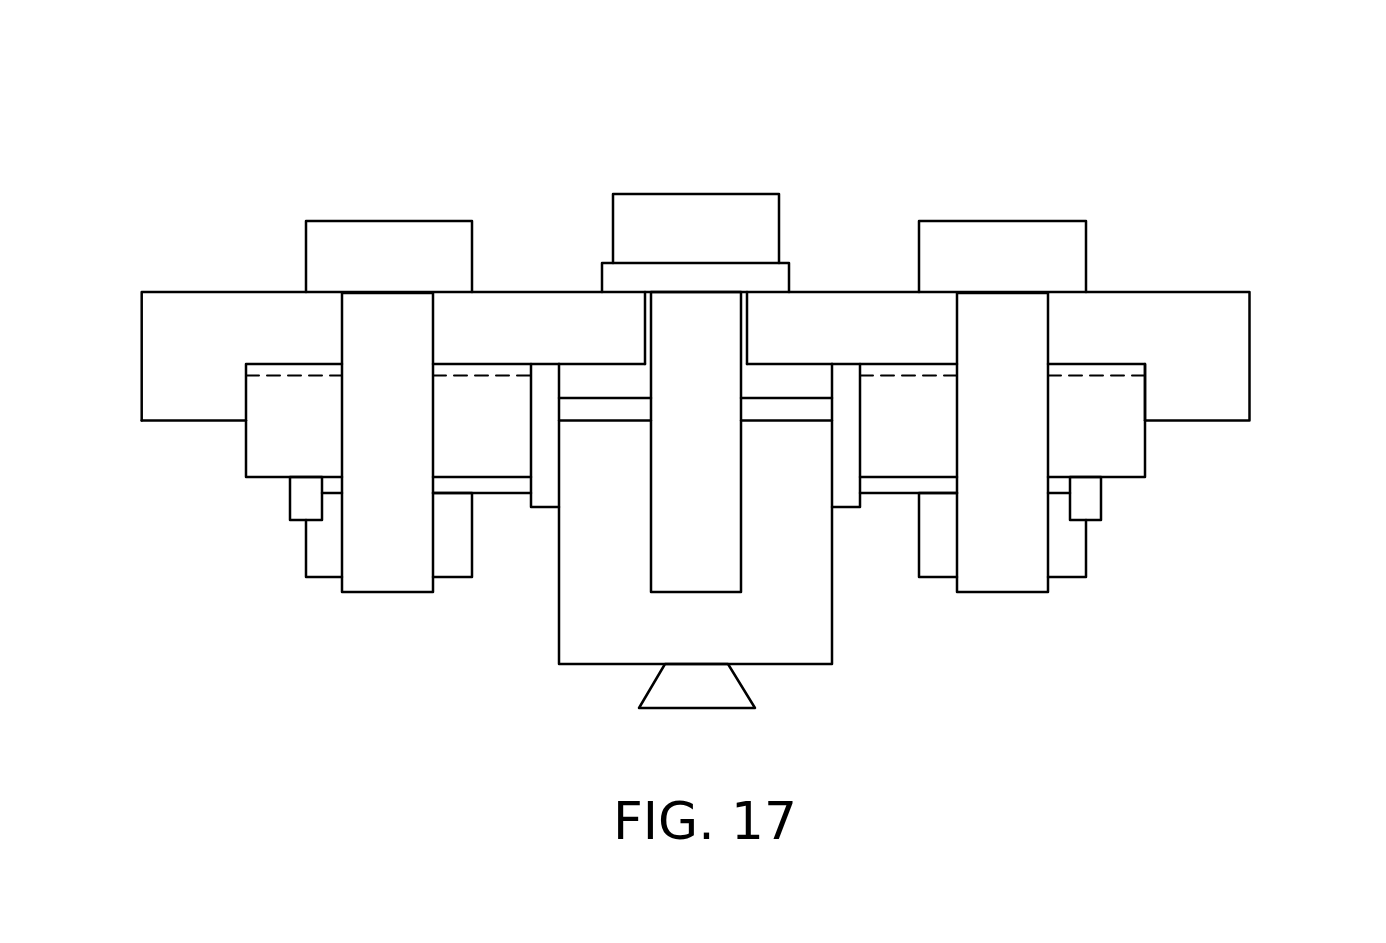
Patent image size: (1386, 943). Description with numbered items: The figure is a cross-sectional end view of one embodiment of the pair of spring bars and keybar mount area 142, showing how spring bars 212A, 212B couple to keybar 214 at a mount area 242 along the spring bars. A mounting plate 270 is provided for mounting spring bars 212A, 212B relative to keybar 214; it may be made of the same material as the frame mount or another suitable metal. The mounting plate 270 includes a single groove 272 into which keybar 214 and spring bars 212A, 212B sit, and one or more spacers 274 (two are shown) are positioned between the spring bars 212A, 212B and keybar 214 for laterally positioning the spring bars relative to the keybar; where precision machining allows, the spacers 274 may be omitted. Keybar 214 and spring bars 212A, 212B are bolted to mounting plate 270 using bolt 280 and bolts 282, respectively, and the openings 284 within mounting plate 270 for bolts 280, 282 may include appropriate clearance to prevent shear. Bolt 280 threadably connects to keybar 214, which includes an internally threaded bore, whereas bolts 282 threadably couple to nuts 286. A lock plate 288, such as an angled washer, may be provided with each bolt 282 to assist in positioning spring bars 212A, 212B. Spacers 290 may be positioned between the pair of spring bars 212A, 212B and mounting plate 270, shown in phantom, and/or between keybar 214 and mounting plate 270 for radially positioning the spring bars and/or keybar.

The mounting assembly 142 is at (1266, 251).
The mount area 242 is at (802, 122).
The mounting plate 270 is at (1212, 343).
The groove 272 is at (1147, 388).
The spacer 274 is at (542, 480).
The bolt 280 is at (695, 193).
The bolt 282 is at (388, 220).
The opening 284 is at (342, 334).
The nut 286 is at (315, 553).
The lock plate 288 is at (300, 498).
The spacer 290 is at (617, 383).
The spring bar 212A is at (270, 443).
The spring bar 212B is at (1130, 450).
The keybar 214 is at (795, 635).